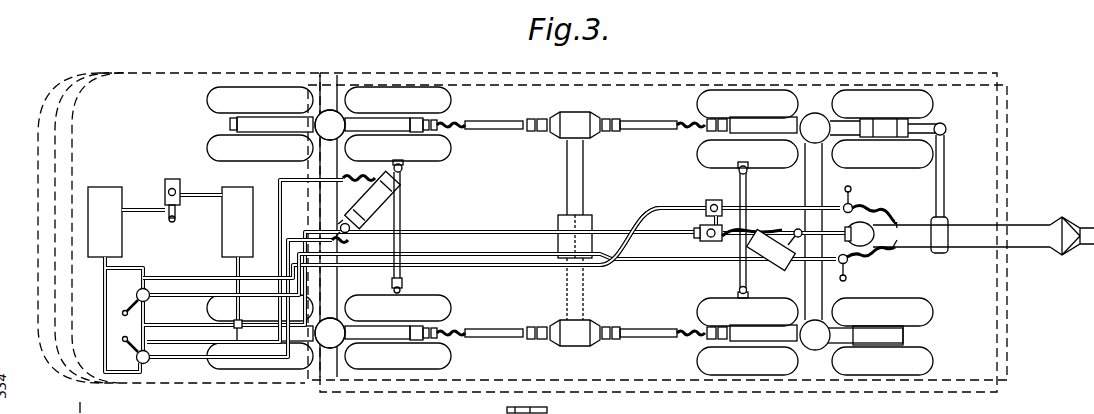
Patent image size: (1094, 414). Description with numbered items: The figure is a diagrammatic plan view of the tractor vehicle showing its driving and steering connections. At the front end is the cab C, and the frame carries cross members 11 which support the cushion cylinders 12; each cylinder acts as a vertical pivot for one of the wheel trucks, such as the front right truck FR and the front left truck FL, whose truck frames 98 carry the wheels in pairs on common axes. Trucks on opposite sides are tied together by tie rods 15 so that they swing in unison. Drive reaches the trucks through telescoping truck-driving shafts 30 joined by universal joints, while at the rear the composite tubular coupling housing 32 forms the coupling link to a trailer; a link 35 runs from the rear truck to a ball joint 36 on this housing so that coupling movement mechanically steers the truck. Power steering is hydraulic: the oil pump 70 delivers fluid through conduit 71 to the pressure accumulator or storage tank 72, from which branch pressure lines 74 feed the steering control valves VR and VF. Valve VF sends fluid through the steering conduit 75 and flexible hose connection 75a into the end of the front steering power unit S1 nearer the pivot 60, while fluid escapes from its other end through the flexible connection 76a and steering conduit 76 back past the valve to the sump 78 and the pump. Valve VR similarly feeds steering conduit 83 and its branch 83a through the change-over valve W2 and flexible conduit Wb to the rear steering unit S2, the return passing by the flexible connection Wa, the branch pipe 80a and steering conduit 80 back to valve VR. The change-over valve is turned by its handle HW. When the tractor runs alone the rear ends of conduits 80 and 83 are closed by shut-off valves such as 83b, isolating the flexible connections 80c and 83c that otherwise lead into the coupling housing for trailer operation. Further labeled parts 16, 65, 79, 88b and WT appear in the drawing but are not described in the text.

The cross members 11 is at (333, 305).
The cushion cylinders 12 is at (330, 108).
The tie rods 15 is at (747, 194).
The rod 16 is at (402, 222).
The telescoping truck-driving shafts 30 is at (488, 130).
The coupling housing 32 is at (1027, 226).
The link 35 is at (944, 168).
The ball joint 36 is at (948, 222).
The pivot 60 is at (353, 244).
The conduit 65 is at (193, 278).
The oil pump 70 is at (173, 184).
The conduit 71 is at (152, 201).
The pressure accumulator or storage tank 72 is at (102, 190).
The branch pressure lines 74 is at (229, 407).
The steering conduit 75 is at (192, 355).
The flexible hose connection 75a is at (352, 243).
The steering conduit 76 is at (178, 337).
The flexible connection 76a is at (396, 186).
The sump 78 is at (239, 195).
The conduit 79 is at (104, 292).
The steering conduit 80 is at (200, 296).
The branch pipe 80a is at (697, 247).
The flexible connection 80c is at (898, 253).
The steering conduit 83 is at (651, 210).
The branch 83a is at (740, 177).
The shut-off valve 83b is at (851, 205).
The flexible connection 83c is at (880, 212).
The flexible hose 88b is at (862, 268).
The truck frame 98 is at (360, 127).
The cab C is at (143, 83).
The wheel tandem WT is at (222, 137).
The front right truck FR is at (336, 112).
The front left truck FL is at (320, 348).
The steering control valve VR is at (147, 285).
The steering control valve VF is at (147, 366).
The handle HW is at (557, 413).
The change-over valve W2 is at (713, 205).
The flexible connection Wa is at (727, 250).
The flexible conduit Wb is at (760, 229).
The steering power unit S1 is at (368, 203).
The rear steering unit S2 is at (763, 263).